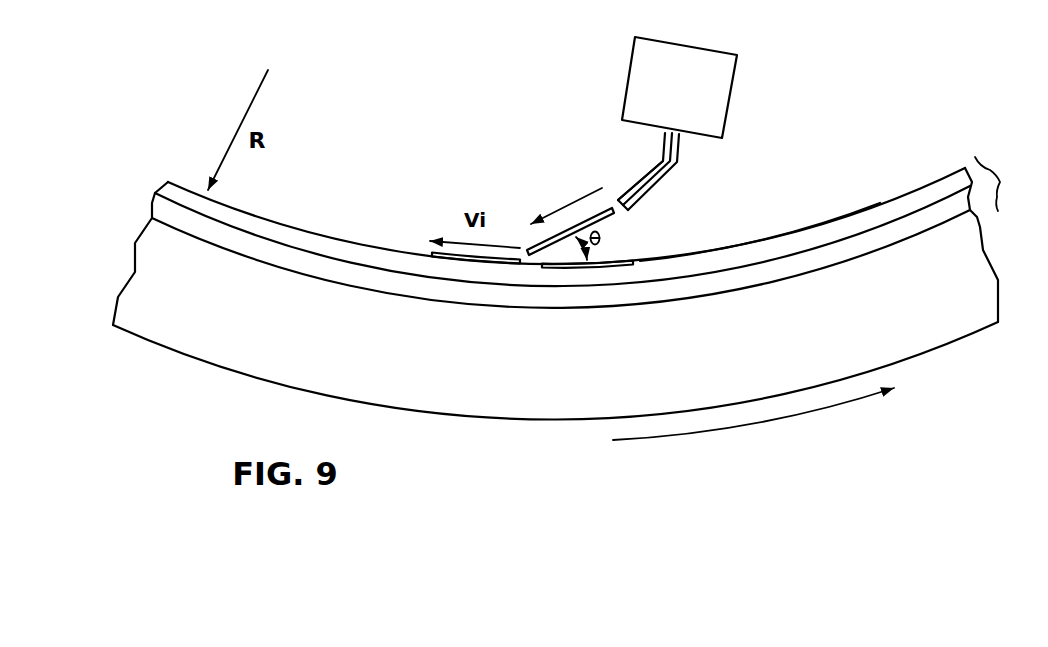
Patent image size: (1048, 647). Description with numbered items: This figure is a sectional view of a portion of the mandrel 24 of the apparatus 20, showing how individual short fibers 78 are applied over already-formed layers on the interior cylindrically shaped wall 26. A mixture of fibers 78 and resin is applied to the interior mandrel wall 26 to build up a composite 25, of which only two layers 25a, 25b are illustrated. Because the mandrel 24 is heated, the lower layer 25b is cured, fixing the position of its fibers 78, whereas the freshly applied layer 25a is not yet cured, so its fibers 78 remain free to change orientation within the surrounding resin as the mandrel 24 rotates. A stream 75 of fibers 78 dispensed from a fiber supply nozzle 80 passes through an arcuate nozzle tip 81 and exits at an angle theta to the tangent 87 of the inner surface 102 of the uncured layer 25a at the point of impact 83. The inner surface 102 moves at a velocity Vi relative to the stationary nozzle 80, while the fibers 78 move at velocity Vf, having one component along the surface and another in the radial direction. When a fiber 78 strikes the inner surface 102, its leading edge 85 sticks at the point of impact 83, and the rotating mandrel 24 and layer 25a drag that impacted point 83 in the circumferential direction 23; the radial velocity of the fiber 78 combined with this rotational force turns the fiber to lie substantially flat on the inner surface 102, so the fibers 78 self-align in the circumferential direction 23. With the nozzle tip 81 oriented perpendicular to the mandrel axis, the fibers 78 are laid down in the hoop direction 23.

The apparatus 20 is at (192, 161).
The circumferential direction 23 is at (753, 423).
The mandrel 24 is at (188, 330).
The composite 25 is at (1002, 184).
The layer 25a is at (837, 234).
The layer 25b is at (903, 232).
The interior cylindrically shaped wall 26 is at (777, 279).
The stream 75 is at (561, 160).
The short reinforcing fibers 78 is at (460, 253).
The fiber supply nozzle 80 is at (692, 63).
The arcuate nozzle tip 81 is at (641, 183).
The point of impact 83 is at (530, 265).
The leading edge 85 is at (527, 241).
The tangent 87 is at (588, 265).
The inner surface 102 is at (354, 238).